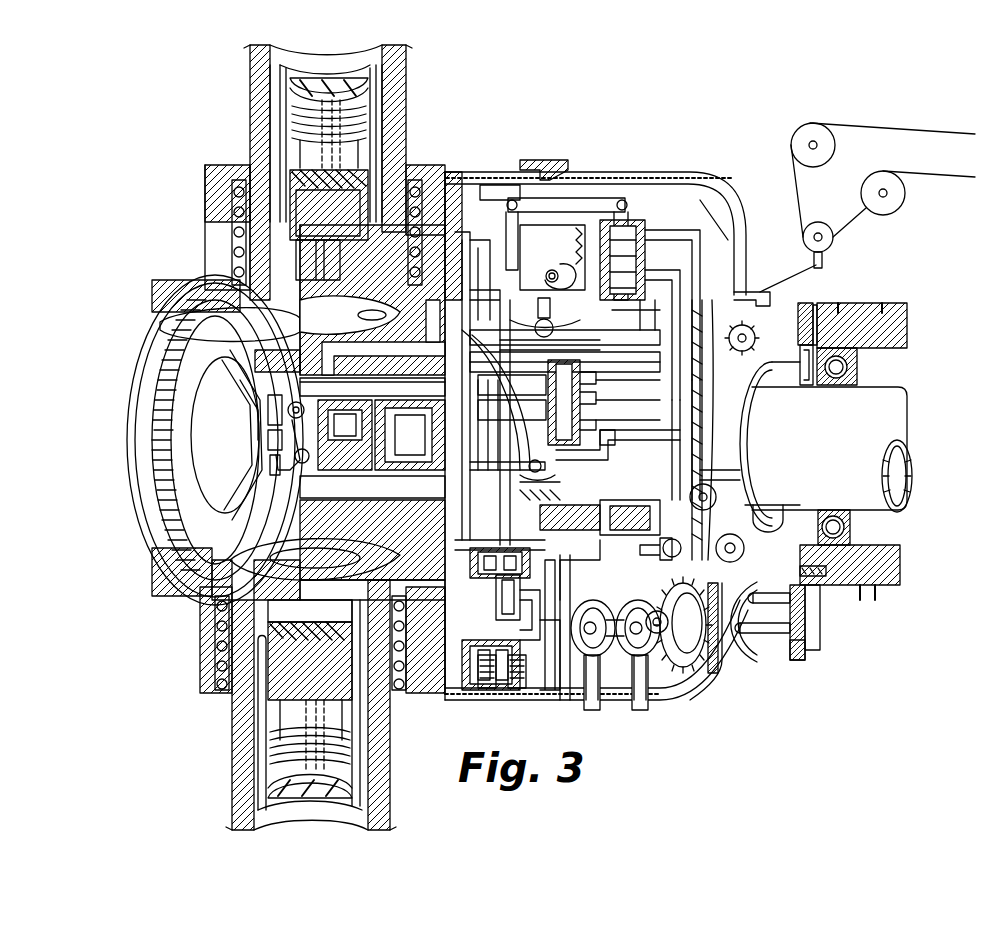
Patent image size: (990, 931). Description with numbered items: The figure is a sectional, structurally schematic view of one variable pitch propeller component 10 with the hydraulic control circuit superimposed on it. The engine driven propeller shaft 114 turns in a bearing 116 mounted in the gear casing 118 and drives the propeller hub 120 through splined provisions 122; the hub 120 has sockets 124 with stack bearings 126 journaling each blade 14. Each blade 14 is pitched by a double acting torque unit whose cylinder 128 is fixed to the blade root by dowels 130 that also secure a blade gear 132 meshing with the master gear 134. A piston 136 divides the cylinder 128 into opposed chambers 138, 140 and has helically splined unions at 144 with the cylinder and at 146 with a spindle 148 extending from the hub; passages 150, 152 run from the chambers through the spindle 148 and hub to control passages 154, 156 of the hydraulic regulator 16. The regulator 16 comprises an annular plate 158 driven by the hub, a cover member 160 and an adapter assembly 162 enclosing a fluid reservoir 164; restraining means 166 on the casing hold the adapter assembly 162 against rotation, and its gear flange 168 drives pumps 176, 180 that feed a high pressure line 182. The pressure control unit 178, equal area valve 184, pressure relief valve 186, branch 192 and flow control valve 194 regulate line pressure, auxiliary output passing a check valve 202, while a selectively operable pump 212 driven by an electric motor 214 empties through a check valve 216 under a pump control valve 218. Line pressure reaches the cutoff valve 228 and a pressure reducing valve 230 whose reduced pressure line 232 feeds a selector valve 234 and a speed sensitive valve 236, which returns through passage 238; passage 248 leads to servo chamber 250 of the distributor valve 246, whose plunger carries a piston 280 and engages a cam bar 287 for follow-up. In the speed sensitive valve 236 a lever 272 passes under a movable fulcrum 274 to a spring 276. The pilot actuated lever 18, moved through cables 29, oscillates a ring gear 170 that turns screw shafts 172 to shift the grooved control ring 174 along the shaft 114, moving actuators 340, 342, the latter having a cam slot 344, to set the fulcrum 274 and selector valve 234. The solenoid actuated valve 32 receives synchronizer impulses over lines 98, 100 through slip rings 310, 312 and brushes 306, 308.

The variable pitch propeller component 10 is at (175, 620).
The pitch shiftable blade 14 is at (402, 88).
The hydraulic regulator 16 is at (544, 159).
The pilot actuated lever 18 is at (752, 292).
The cables 29 is at (928, 130).
The solenoid actuated valve 32 is at (660, 598).
The impulse line 98 is at (810, 630).
The impulse line 100 is at (820, 625).
The engine driven propeller shaft 114 is at (248, 414).
The bearing 116 is at (850, 528).
The gear casing 118 is at (858, 304).
The propeller hub 120 is at (155, 586).
The splined provisions 122 is at (240, 446).
The sockets 124 is at (213, 190).
The stack bearings 126 is at (220, 655).
The cylinder 128 is at (282, 94).
The dowels 130 is at (384, 300).
The blade gear 132 is at (228, 292).
The master gear 134 is at (150, 410).
The piston 136 is at (300, 156).
The piston chamber 138 is at (298, 112).
The piston chamber 140 is at (288, 216).
The helically splined union 144 is at (405, 186).
The helically splined union 146 is at (300, 226).
The spindle 148 is at (290, 246).
The passage 150 is at (186, 320).
The passage 152 is at (292, 540).
The control passage 154 is at (606, 356).
The control passage 156 is at (606, 332).
The annular plate 158 is at (462, 222).
The cover member 160 is at (680, 168).
The adapter assembly 162 is at (768, 444).
The reservoir 164 is at (705, 210).
The restraining means 166 is at (806, 378).
The gear flange 168 is at (750, 518).
The ring gear 170 is at (770, 338).
The screw shafts 172 is at (752, 350).
The grooved control ring 174 is at (496, 412).
The system pump 176 is at (586, 700).
The pressure control unit 178 is at (456, 684).
The auxiliary pump 180 is at (648, 700).
The high pressure line 182 is at (560, 700).
The equal area valve 184 is at (522, 700).
The pressure relief valve 186 is at (480, 700).
The branch 192 is at (502, 630).
The flow control valve 194 is at (498, 612).
The check valve 202 is at (490, 558).
The selectively operable pump 212 is at (412, 367).
The electric motor 214 is at (332, 448).
The check valve 216 is at (391, 449).
The pump control valve 218 is at (698, 619).
The cutoff valve 228 is at (744, 452).
The pressure reducing valve 230 is at (372, 382).
The reduced pressure line 232 is at (452, 270).
The selector valve 234 is at (566, 400).
The speed sensitive valve 236 is at (496, 222).
The passage 238 is at (482, 246).
The distributor valve 246 is at (667, 323).
The passage 248 is at (724, 240).
The servo chamber 250 is at (630, 240).
The lever 272 is at (552, 276).
The movable fulcrum 274 is at (554, 268).
The spring 276 is at (552, 257).
The piston 280 is at (640, 232).
The cam bar 287 is at (604, 196).
The brush 306 is at (770, 640).
The brush 308 is at (769, 609).
The slip ring 310 is at (790, 650).
The slip ring 312 is at (812, 592).
The actuator 340 is at (540, 326).
The actuator 342 is at (575, 449).
The cam slot 344 is at (584, 496).